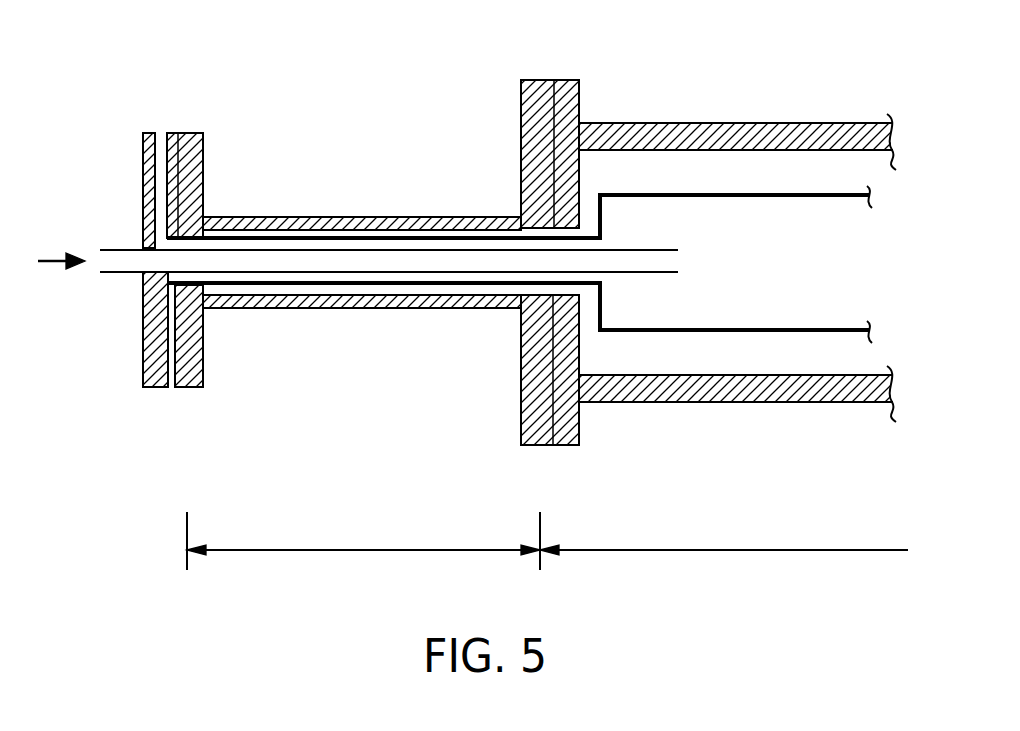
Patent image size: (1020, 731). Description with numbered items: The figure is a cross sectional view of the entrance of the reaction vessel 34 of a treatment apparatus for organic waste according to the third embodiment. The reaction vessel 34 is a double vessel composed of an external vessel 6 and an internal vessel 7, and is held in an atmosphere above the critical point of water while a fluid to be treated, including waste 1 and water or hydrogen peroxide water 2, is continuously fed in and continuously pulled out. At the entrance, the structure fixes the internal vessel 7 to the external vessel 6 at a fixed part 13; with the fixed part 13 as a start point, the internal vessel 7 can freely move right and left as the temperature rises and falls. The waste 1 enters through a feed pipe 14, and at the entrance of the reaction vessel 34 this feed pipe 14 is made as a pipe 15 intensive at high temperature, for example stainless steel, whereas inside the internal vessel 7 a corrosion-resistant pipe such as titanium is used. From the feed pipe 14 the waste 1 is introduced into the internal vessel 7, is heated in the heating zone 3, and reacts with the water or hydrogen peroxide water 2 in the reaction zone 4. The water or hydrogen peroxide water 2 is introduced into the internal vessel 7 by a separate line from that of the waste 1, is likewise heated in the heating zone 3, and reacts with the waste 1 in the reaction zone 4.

The waste 1 is at (52, 261).
The water or hydrogen peroxide water 2 is at (161, 150).
The heating zone 3 is at (268, 548).
The reaction zone 4 is at (625, 548).
The external vessel 6 is at (609, 123).
The internal vessel 7 is at (770, 195).
The fixed part 13 is at (207, 216).
The feed pipe 14 is at (630, 273).
The pipe intensive at high temperature 15 is at (122, 276).
The reaction vessel 34 is at (432, 42).